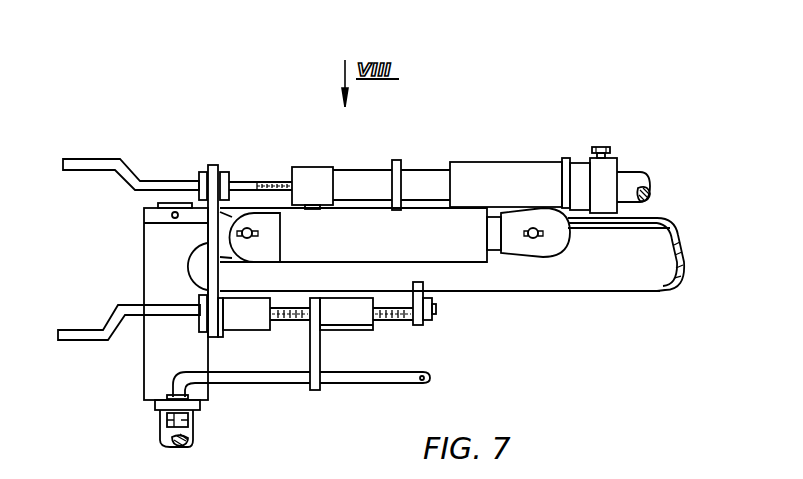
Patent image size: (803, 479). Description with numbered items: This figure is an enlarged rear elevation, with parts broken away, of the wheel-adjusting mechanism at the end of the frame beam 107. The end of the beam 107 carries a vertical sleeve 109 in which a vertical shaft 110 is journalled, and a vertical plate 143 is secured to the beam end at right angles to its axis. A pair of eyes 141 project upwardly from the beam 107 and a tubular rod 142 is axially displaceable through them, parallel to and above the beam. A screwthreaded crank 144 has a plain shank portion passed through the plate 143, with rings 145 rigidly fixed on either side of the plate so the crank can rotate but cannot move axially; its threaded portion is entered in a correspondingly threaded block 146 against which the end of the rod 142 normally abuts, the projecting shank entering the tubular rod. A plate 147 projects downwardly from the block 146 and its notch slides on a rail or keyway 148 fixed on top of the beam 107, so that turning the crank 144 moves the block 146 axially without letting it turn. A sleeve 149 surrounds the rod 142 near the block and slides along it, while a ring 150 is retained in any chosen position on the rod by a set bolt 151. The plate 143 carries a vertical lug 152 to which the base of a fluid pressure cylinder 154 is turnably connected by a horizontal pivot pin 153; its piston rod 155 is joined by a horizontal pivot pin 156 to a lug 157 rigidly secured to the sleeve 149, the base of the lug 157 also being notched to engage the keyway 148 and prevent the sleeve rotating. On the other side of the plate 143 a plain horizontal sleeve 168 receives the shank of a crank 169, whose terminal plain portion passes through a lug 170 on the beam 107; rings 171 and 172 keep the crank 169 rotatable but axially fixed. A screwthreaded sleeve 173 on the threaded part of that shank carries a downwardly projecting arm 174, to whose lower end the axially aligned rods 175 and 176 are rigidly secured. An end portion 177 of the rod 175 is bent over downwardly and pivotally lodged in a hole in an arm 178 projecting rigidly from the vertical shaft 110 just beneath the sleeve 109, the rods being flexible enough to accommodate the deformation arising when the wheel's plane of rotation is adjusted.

The frame beam 107 is at (643, 292).
The vertical sleeve 109 is at (150, 255).
The vertical shaft 110 is at (160, 440).
The eyes 141 is at (397, 160).
The rod 142 is at (420, 180).
The vertical plate 143 is at (215, 167).
The screwthreaded crank 144 is at (105, 162).
The rings 145 is at (203, 172).
The screwthreaded block 146 is at (313, 172).
The plate 147 is at (312, 207).
The rail or keyway 148 is at (630, 223).
The sleeve 149 is at (493, 172).
The ring 150 is at (605, 205).
The set bolt 151 is at (602, 147).
The vertical lug 152 is at (222, 235).
The horizontal pivot pin 153 is at (258, 240).
The fluid pressure cylinder 154 is at (457, 262).
The piston rod 155 is at (488, 228).
The horizontal pivot pin 156 is at (533, 238).
The lug 157 is at (567, 158).
The plain horizontal sleeve 168 is at (247, 320).
The crank 169 is at (87, 327).
The lug 170 is at (422, 325).
The ring 171 is at (200, 330).
The ring 172 is at (424, 328).
The screwthreaded sleeve 173 is at (368, 325).
The downwardly projecting arm 174 is at (316, 352).
The rod 175 is at (285, 385).
The rod 176 is at (400, 385).
The end portion 177 is at (188, 425).
The arm 178 is at (155, 405).